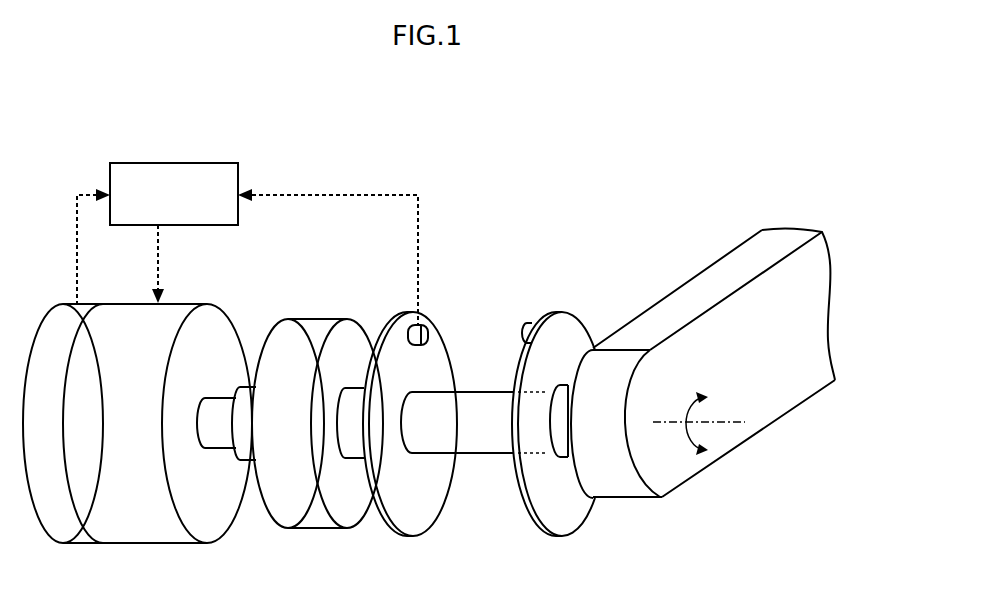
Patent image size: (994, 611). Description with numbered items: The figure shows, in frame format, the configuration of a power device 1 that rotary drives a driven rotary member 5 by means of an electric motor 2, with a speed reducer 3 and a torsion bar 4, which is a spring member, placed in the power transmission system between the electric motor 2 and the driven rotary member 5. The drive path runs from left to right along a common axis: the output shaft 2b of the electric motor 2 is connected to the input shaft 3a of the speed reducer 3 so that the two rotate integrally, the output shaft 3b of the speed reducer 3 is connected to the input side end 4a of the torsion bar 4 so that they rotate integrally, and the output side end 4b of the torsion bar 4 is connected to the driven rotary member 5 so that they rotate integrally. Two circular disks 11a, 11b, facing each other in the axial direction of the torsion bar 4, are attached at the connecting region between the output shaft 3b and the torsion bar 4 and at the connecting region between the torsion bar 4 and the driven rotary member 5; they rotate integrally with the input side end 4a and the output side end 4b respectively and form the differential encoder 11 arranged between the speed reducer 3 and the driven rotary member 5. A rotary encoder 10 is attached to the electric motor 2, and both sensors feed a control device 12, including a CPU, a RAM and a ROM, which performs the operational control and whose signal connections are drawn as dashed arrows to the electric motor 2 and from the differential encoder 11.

The power device 1 is at (535, 207).
The electric motor 2 is at (133, 547).
The output shaft 2b is at (213, 435).
The speed reducer 3 is at (300, 530).
The input shaft 3a is at (245, 443).
The output shaft 3b is at (355, 447).
The torsion bar 4 is at (477, 453).
The input side end 4a is at (412, 430).
The output side end 4b is at (545, 455).
The driven rotary member 5 is at (687, 483).
The rotary encoder 10 is at (68, 532).
The differential encoder 11 is at (395, 303).
The circular disk 11a is at (437, 327).
The circular disk 11b is at (567, 312).
The control device 12 is at (166, 162).